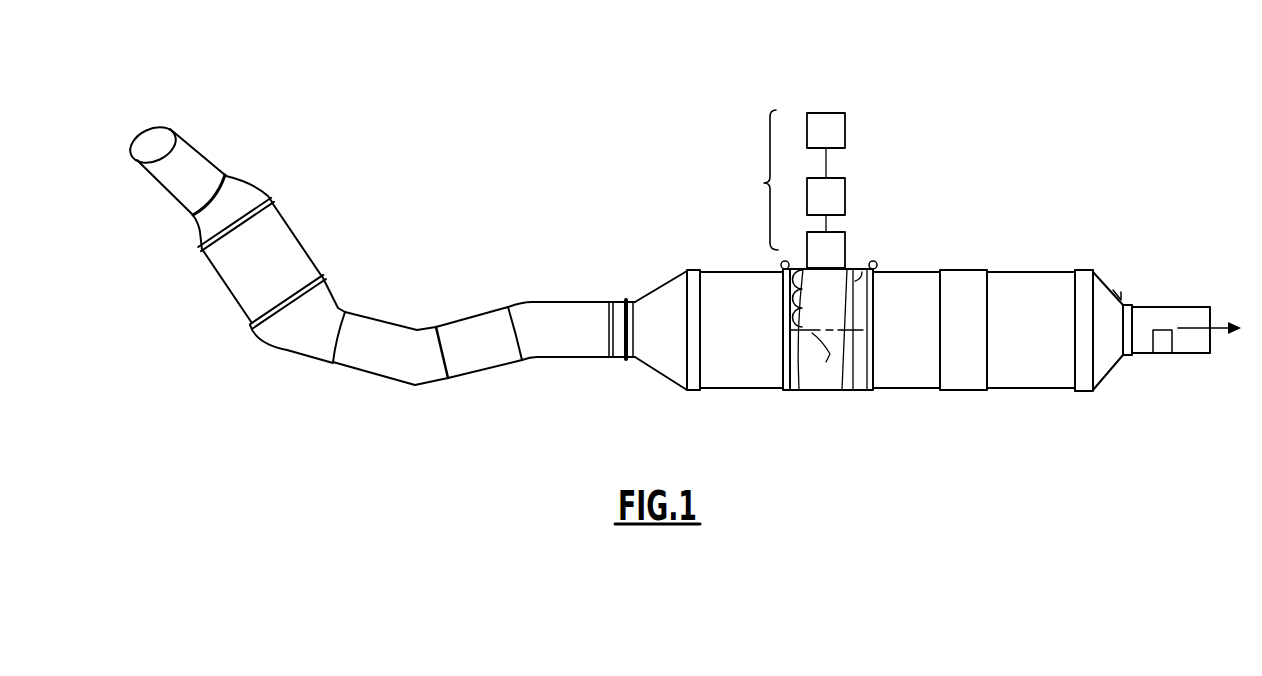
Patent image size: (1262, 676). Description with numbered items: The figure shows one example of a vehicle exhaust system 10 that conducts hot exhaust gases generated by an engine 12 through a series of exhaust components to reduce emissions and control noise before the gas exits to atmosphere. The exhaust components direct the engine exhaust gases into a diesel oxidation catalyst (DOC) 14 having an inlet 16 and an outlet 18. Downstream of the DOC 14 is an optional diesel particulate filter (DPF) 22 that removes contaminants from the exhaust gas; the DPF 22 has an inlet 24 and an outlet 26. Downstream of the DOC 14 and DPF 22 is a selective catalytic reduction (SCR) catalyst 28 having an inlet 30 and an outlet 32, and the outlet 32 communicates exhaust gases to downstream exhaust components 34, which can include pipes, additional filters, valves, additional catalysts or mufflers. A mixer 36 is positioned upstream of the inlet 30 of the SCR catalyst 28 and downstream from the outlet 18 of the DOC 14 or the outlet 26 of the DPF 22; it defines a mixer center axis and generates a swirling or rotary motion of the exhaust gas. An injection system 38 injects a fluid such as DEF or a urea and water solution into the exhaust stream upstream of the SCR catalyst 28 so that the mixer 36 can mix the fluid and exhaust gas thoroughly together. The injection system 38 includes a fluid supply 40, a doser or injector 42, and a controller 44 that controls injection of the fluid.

The vehicle exhaust system 10 is at (524, 145).
The engine 12 is at (149, 149).
The diesel oxidation catalyst (DOC) 14 is at (300, 238).
The inlet 16 is at (275, 204).
The outlet 18 is at (323, 275).
The diesel particulate filter (DPF) 22 is at (743, 391).
The inlet 24 is at (703, 391).
The outlet 26 is at (780, 391).
The selective catalytic reduction (SCR) catalyst 28 is at (910, 271).
The inlet 30 is at (877, 391).
The outlet 32 is at (939, 391).
The downstream exhaust components 34 is at (1070, 271).
The mixer 36 is at (862, 272).
The injection system 38 is at (755, 180).
The fluid supply 40 is at (840, 209).
The doser or injector 42 is at (840, 263).
The controller 44 is at (840, 144).